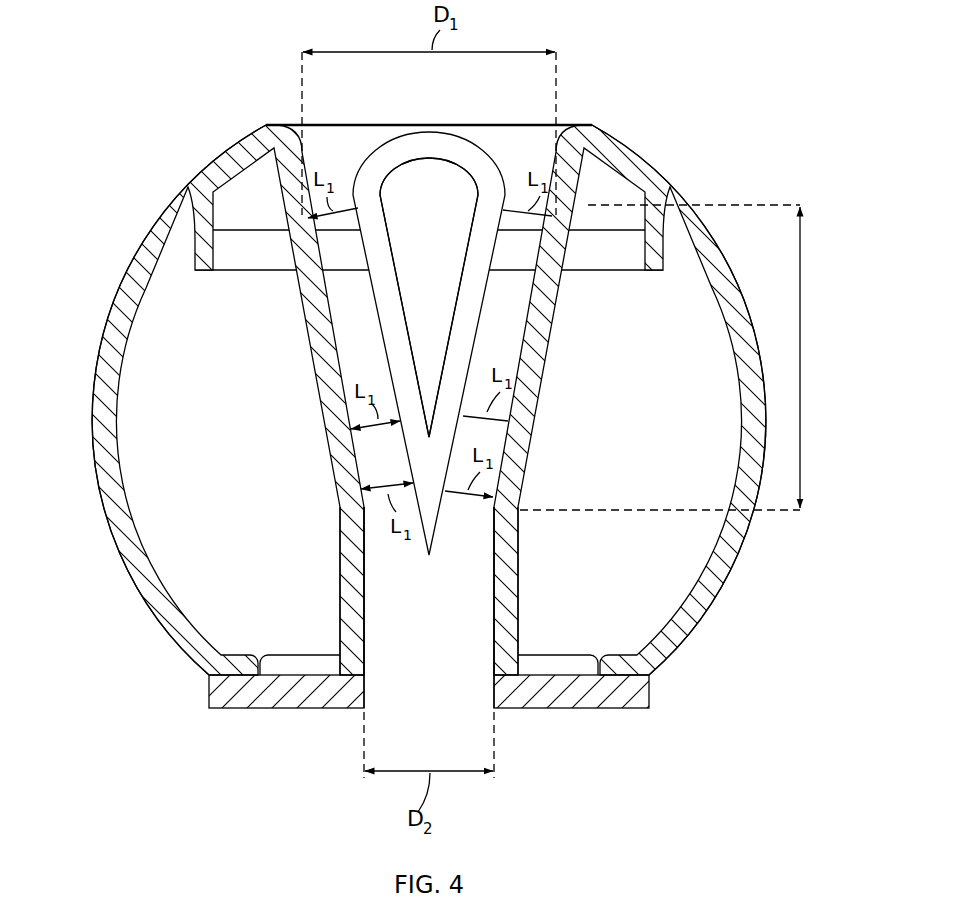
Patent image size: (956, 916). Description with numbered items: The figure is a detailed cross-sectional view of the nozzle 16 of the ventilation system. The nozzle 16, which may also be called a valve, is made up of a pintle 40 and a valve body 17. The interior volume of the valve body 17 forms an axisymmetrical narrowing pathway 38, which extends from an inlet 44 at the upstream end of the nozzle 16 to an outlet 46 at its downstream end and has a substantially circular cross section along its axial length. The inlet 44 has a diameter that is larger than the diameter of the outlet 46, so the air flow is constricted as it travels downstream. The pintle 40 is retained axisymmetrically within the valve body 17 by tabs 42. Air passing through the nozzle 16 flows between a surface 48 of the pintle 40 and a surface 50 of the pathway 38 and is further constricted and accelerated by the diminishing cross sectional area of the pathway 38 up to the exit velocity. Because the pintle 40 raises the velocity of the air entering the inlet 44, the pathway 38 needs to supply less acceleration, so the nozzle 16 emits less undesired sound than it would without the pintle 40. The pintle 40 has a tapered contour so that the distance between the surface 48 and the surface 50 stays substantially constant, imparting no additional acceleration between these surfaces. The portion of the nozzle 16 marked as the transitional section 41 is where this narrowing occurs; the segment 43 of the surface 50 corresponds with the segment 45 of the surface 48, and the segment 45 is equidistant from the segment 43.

The nozzle 16 is at (148, 613).
The valve body 17 is at (175, 640).
The pathway 38 is at (437, 642).
The pintle 40 is at (398, 437).
The transitional section 41 is at (810, 404).
The tabs 42 is at (345, 273).
The segment 43 is at (333, 388).
The inlet 44 is at (522, 132).
The segment 45 is at (380, 272).
The outlet 46 is at (418, 700).
The surface 48 is at (385, 308).
The surface 50 is at (340, 363).